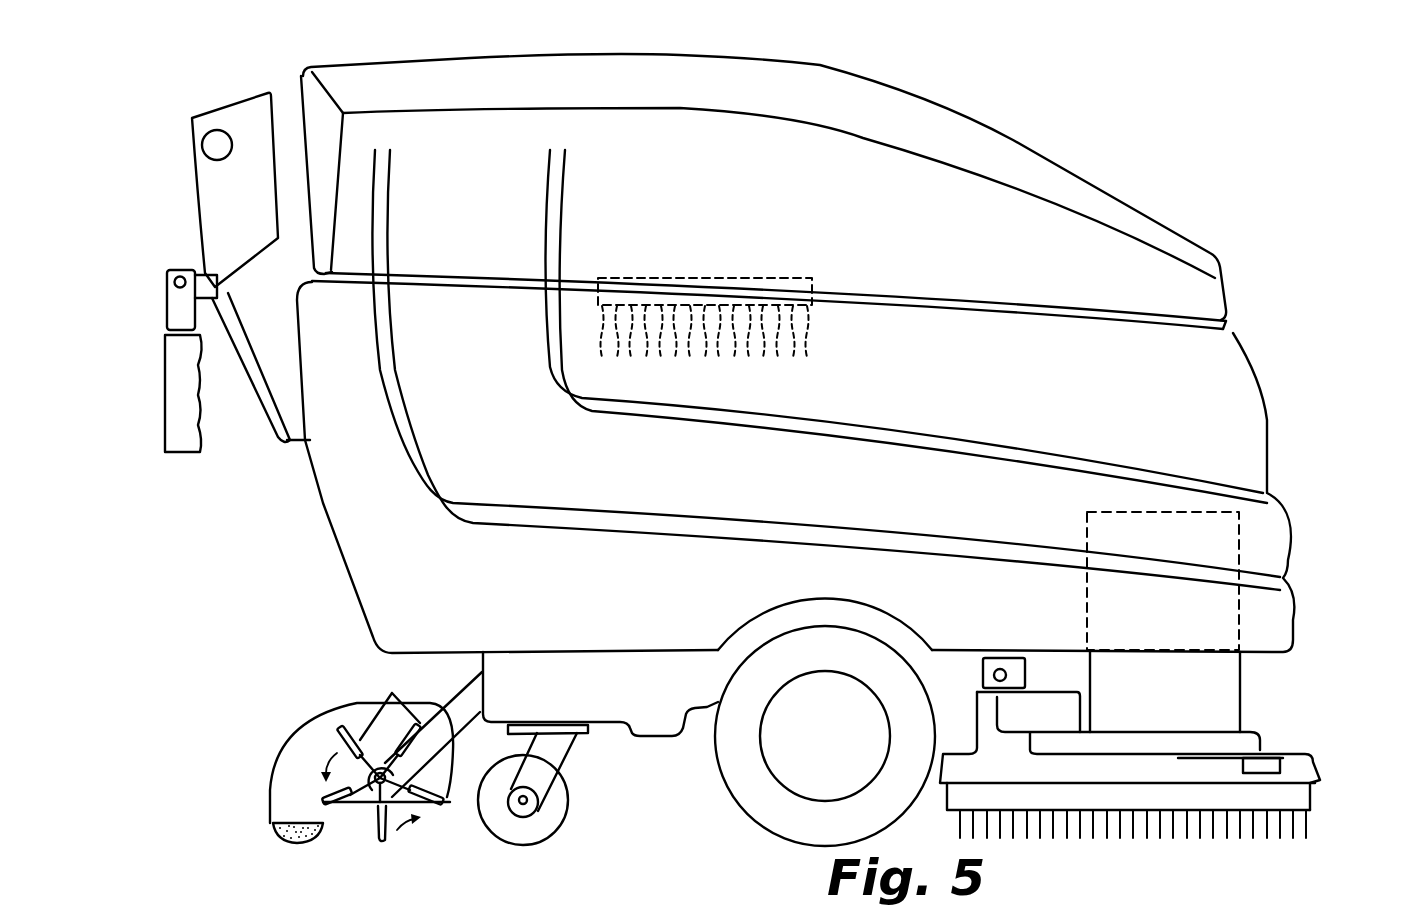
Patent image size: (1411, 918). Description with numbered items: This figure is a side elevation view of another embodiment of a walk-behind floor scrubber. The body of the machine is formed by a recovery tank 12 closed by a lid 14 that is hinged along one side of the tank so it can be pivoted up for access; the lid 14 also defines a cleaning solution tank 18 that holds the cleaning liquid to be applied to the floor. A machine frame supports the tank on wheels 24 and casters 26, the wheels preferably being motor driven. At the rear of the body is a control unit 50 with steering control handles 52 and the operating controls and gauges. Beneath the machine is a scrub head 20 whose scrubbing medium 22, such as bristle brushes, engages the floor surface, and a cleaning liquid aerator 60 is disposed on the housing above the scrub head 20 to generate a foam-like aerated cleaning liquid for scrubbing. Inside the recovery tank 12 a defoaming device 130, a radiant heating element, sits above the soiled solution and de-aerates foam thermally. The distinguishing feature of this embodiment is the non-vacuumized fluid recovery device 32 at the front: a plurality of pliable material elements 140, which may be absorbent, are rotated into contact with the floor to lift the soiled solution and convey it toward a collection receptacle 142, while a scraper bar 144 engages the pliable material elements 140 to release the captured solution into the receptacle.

The recovery tank 12 is at (1257, 410).
The lid 14 is at (1013, 140).
The cleaning solution tank 18 is at (910, 160).
The scrub head 20 is at (1308, 717).
The scrubbing medium 22 is at (1310, 822).
The wheels 24 is at (753, 797).
The casters 26 is at (558, 812).
The fluid recovery device 32 is at (266, 726).
The control unit 50 is at (205, 197).
The steering control handles 52 is at (216, 130).
The cleaning liquid aerator 60 is at (1237, 543).
The defoaming device 130 is at (812, 305).
The pliable material elements 140 is at (392, 694).
The collection receptacle 142 is at (270, 823).
The scraper bar 144 is at (333, 804).